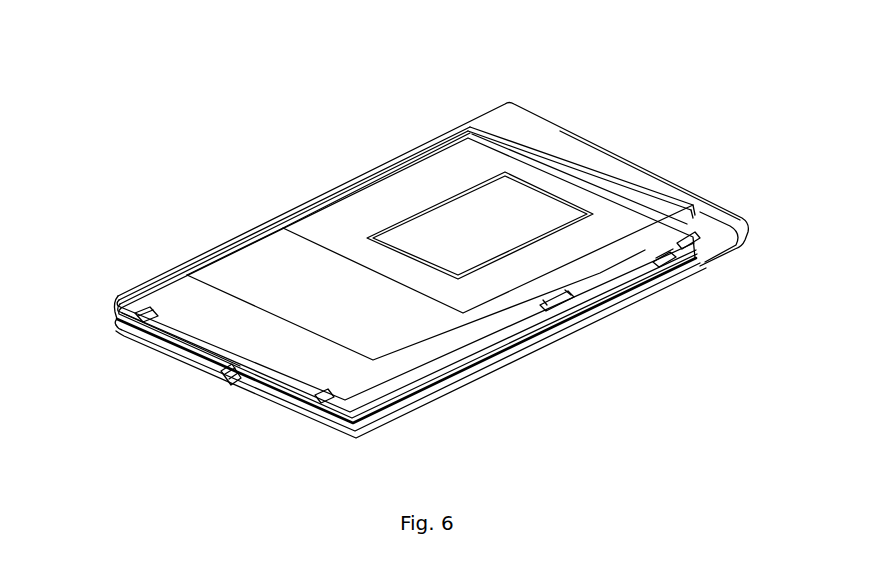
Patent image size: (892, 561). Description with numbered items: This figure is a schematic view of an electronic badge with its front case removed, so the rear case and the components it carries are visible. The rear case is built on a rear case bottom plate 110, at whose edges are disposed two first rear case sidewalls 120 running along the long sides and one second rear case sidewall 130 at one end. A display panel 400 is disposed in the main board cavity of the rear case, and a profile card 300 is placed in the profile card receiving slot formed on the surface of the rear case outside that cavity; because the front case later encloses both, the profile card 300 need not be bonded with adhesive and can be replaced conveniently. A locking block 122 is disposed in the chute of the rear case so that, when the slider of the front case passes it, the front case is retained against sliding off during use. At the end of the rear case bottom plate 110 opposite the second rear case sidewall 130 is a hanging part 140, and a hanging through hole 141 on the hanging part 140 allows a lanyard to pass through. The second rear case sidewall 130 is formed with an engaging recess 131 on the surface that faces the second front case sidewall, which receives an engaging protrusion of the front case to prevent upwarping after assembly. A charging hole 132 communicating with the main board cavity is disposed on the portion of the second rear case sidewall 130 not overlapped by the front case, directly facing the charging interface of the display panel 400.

The rear case bottom plate 110 is at (380, 200).
The first rear case sidewall 120 is at (485, 335).
The locking block 122 is at (667, 272).
The second rear case sidewall 130 is at (208, 337).
The engaging recess 131 is at (124, 329).
The charging hole 132 is at (220, 378).
The hanging part 140 is at (542, 137).
The hanging through hole 141 is at (620, 153).
The profile card 300 is at (460, 223).
The display panel 400 is at (272, 287).